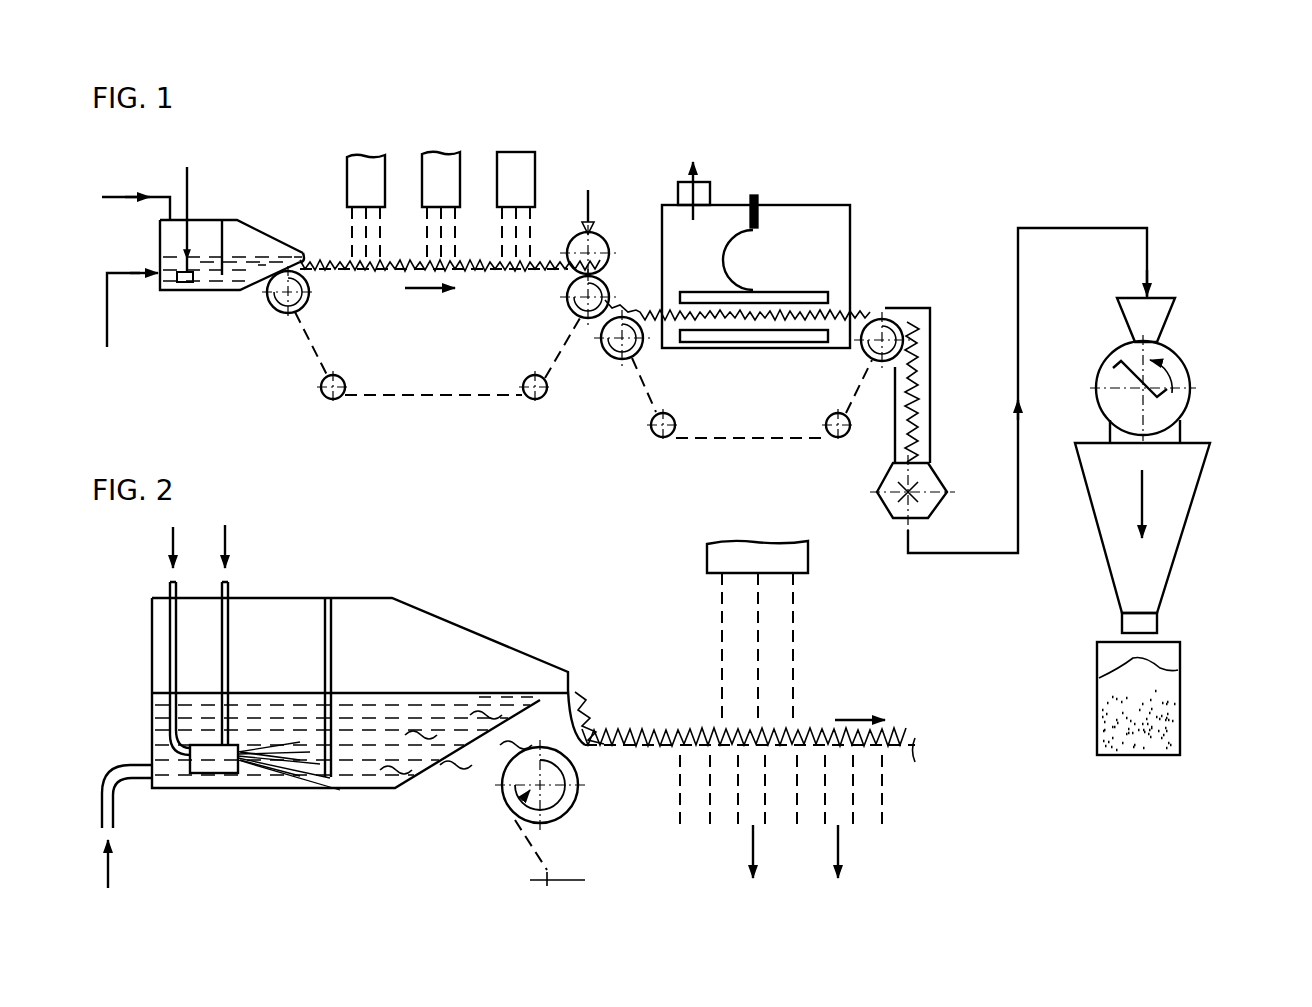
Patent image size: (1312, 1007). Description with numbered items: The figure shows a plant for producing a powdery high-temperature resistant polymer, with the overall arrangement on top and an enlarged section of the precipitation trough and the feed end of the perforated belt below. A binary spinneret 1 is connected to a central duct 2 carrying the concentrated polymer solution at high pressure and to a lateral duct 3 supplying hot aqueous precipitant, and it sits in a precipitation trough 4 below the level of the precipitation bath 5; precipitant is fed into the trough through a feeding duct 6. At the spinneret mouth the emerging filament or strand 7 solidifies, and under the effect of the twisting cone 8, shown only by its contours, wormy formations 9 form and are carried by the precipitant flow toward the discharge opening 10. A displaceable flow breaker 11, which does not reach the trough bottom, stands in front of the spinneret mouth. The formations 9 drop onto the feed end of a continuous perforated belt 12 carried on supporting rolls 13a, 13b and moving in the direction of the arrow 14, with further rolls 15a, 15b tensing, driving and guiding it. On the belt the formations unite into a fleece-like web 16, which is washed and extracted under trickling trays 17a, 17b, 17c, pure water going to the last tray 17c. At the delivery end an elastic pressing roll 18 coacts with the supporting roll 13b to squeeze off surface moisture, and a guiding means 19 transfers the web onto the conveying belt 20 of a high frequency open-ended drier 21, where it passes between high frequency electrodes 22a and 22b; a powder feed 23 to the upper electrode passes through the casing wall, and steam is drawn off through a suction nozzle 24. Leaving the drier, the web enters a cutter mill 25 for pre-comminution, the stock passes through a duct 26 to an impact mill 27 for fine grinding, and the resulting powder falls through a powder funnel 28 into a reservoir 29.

In FIG. 1, the binary spinneret 1 is at (195, 292).
In FIG. 2, the binary spinneret 1 is at (207, 777).
In FIG. 1, the central duct 2 is at (137, 195).
In FIG. 2, the central duct 2 is at (166, 588).
In FIG. 1, the lateral duct 3 is at (187, 185).
In FIG. 2, the lateral duct 3 is at (232, 585).
In FIG. 1, the precipitation trough 4 is at (170, 291).
In FIG. 2, the precipitation trough 4 is at (370, 790).
In FIG. 1, the precipitation bath 5 is at (207, 267).
In FIG. 2, the precipitation bath 5 is at (428, 710).
In FIG. 1, the feeding duct 6 is at (107, 302).
In FIG. 2, the feeding duct 6 is at (112, 770).
In FIG. 2, the filament or strand 7 is at (252, 770).
In FIG. 2, the twisting cone 8 is at (255, 750).
In FIG. 1, the wormy formations 9 is at (298, 257).
In FIG. 2, the wormy formations 9 is at (527, 700).
In FIG. 1, the discharge opening 10 is at (306, 248).
In FIG. 2, the discharge opening 10 is at (582, 676).
In FIG. 1, the flow breaker 11 is at (222, 262).
In FIG. 2, the flow breaker 11 is at (333, 640).
In FIG. 1, the perforated belt 12 is at (403, 397).
In FIG. 2, the perforated belt 12 is at (640, 752).
In FIG. 1, the supporting roll 13a is at (283, 310).
In FIG. 2, the supporting roll 13a is at (510, 796).
In FIG. 1, the supporting roll 13b is at (578, 300).
In FIG. 1, the arrow 14 is at (427, 288).
In FIG. 2, the arrow 14 is at (860, 720).
In FIG. 1, the roll 15a is at (328, 400).
In FIG. 1, the roll 15b is at (532, 400).
In FIG. 1, the fleece-like web 16 is at (411, 246).
In FIG. 2, the fleece-like web 16 is at (660, 724).
In FIG. 1, the trickling tray 17a is at (360, 168).
In FIG. 2, the trickling tray 17a is at (725, 558).
In FIG. 1, the trickling tray 17b is at (443, 165).
In FIG. 1, the trickling tray 17c is at (518, 165).
In FIG. 1, the pressing roll 18 is at (600, 240).
In FIG. 1, the guiding means 19 is at (617, 297).
In FIG. 1, the conveying belt 20 is at (627, 395).
In FIG. 1, the high frequency open-ended drier 21 is at (856, 236).
In FIG. 1, the high frequency electrode 22a is at (793, 295).
In FIG. 1, the high frequency electrode 22b is at (728, 335).
In FIG. 1, the powder feed 23 is at (757, 195).
In FIG. 1, the suction nozzle 24 is at (680, 185).
In FIG. 1, the cutter mill 25 is at (878, 490).
In FIG. 1, the duct 26 is at (1063, 228).
In FIG. 1, the impact mill 27 is at (1183, 360).
In FIG. 1, the powder funnel 28 is at (1195, 500).
In FIG. 1, the reservoir 29 is at (1180, 685).